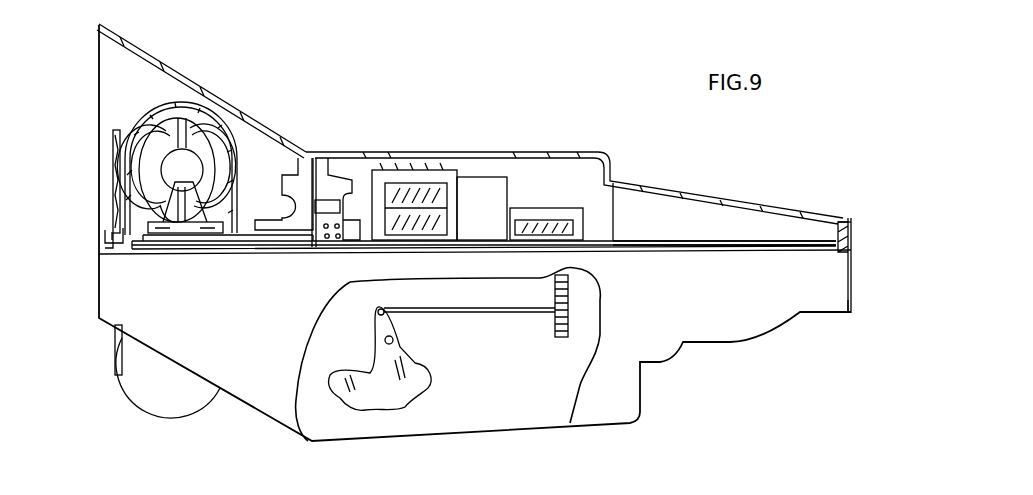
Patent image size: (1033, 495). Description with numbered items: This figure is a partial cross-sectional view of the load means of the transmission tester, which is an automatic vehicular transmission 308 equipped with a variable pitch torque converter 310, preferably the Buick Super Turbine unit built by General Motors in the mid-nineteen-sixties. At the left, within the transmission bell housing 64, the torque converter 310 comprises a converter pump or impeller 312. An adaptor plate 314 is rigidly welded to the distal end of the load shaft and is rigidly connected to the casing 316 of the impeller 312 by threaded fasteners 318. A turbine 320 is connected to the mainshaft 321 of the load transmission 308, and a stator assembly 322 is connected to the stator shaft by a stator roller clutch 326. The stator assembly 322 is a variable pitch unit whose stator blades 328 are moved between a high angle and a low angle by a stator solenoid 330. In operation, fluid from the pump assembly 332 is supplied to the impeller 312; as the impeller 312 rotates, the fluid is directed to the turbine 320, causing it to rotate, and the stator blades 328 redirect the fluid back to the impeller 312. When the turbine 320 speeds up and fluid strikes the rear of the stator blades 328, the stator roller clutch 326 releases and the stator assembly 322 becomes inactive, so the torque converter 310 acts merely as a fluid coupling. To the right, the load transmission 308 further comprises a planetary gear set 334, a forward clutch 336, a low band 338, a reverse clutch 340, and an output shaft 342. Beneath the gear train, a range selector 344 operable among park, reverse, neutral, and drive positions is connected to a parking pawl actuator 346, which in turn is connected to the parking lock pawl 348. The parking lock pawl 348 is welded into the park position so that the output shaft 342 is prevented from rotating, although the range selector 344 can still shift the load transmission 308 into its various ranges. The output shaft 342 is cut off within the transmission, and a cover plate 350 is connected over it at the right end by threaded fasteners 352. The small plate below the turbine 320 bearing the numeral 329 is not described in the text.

The variable pitch torque converter 310 is at (122, 87).
The transmission bell housing 64 is at (177, 71).
The automatic vehicular transmission 308 is at (430, 117).
The converter pump or impeller 312 is at (190, 153).
The adaptor plate 314 is at (113, 197).
The casing 316 is at (205, 108).
The threaded fasteners 318 is at (113, 180).
The turbine 320 is at (158, 138).
The mainshaft 321 is at (142, 253).
The stator assembly 322 is at (217, 212).
The stator roller clutch 326 is at (215, 230).
The stator blades 328 is at (178, 182).
The mounting plate 329 is at (190, 237).
The stator solenoid 330 is at (320, 247).
The pump assembly 332 is at (323, 158).
The planetary gear set 334 is at (473, 177).
The forward clutch 336 is at (402, 190).
The low band 338 is at (485, 188).
The reverse clutch 340 is at (545, 219).
The output shaft 342 is at (690, 241).
The range selector 344 is at (385, 410).
The parking pawl actuator 346 is at (410, 353).
The parking lock pawl 348 is at (554, 290).
The cover plate 350 is at (851, 300).
The threaded fasteners 352 is at (853, 230).